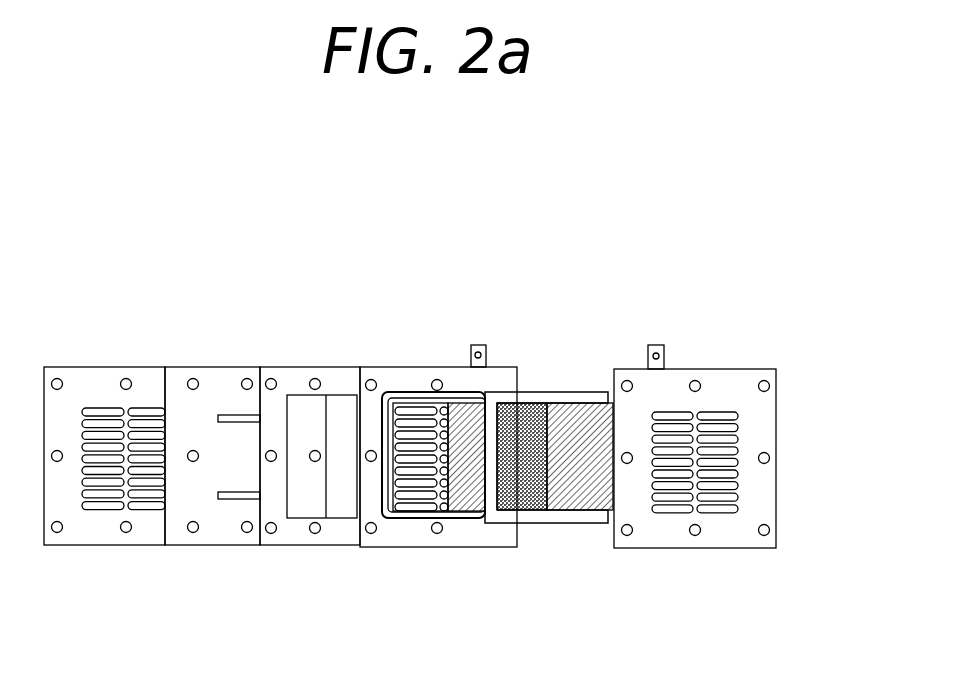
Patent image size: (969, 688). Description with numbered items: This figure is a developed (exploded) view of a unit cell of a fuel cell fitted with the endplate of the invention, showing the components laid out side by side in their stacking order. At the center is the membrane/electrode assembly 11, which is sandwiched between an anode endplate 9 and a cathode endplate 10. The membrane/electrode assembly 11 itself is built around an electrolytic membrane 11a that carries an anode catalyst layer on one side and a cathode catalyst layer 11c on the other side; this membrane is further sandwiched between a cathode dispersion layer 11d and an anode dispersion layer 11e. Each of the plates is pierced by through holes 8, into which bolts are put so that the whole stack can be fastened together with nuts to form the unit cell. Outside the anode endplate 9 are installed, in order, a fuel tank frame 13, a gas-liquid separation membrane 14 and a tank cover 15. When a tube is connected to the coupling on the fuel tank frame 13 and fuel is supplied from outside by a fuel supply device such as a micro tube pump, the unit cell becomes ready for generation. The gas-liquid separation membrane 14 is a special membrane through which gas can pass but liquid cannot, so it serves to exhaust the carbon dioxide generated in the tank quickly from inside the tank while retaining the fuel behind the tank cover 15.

The through holes 8 is at (768, 534).
The anode endplate 9 is at (408, 533).
The cathode endplate 10 is at (734, 533).
The membrane/electrode assembly 11 is at (645, 223).
The electrolytic membrane 11a is at (538, 395).
The cathode catalyst layer 11c is at (520, 408).
The cathode dispersion layer 11d is at (583, 412).
The anode dispersion layer 11e is at (472, 412).
The fuel tank frame 13 is at (290, 375).
The gas-liquid separation membrane 14 is at (210, 375).
The tank cover 15 is at (87, 376).